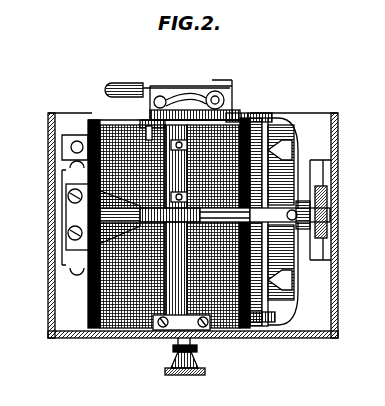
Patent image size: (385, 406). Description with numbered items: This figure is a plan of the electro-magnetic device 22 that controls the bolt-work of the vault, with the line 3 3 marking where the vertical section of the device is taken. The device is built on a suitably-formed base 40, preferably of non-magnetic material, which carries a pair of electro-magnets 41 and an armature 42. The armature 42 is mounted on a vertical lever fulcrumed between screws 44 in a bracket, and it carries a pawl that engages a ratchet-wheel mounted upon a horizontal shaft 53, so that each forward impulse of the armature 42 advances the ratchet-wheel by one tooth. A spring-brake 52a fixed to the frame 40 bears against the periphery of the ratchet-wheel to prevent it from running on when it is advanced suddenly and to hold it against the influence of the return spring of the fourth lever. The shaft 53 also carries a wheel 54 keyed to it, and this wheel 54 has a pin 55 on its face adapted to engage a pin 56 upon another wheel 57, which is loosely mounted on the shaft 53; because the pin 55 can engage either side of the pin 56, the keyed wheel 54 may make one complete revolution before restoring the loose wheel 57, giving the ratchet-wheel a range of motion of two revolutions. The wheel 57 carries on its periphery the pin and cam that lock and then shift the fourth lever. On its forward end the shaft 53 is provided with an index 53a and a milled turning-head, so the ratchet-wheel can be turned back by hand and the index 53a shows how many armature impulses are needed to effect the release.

The section line 3 3 is at (46, 236).
The electro-magnetic device 22 is at (280, 120).
The base 40 is at (320, 122).
The electro-magnets 41 is at (113, 128).
The armature 42 is at (277, 163).
The screws 44 is at (258, 116).
The spring-brake 52a is at (62, 212).
The horizontal shaft 53 is at (76, 135).
The index 53a is at (197, 349).
The wheel 54 is at (127, 127).
The pin 55 is at (192, 92).
The pin 56 is at (147, 124).
The wheel 57 is at (150, 128).